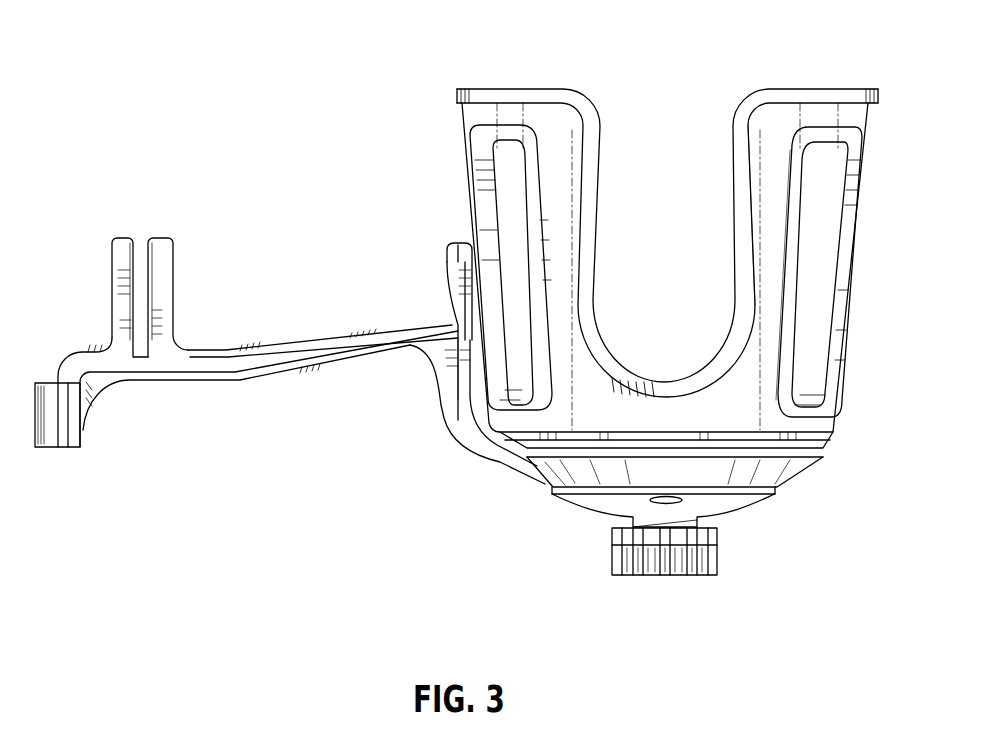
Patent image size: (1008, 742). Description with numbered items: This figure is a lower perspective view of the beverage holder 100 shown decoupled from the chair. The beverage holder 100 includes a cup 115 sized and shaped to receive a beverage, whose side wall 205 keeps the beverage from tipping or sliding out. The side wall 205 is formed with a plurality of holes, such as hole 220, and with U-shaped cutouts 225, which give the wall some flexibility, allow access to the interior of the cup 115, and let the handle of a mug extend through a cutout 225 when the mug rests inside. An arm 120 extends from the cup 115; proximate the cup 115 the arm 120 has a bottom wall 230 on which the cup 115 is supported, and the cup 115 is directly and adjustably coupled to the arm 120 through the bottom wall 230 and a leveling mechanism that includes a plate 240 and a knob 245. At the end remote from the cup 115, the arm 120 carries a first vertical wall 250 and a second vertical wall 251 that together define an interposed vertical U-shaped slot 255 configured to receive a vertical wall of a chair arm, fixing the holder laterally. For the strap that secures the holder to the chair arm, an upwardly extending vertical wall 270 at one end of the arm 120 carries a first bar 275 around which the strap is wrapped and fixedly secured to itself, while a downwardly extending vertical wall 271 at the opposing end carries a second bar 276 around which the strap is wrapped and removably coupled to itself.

The beverage holder 100 is at (268, 165).
The cup 115 is at (818, 82).
The arm 120 is at (260, 385).
The side wall 205 is at (542, 123).
The hole 220 is at (837, 338).
The U-shaped cutout 225 is at (733, 162).
The bottom wall 230 is at (781, 478).
The plate 240 is at (718, 500).
The knob 245 is at (713, 562).
The first vertical wall 250 is at (120, 280).
The second vertical wall 251 is at (167, 267).
The U-shaped slot 255 is at (142, 248).
The upwardly extending vertical wall 270 is at (434, 269).
The downwardly extending vertical wall 271 is at (606, 576).
The first bar 275 is at (447, 250).
The second bar 276 is at (58, 438).